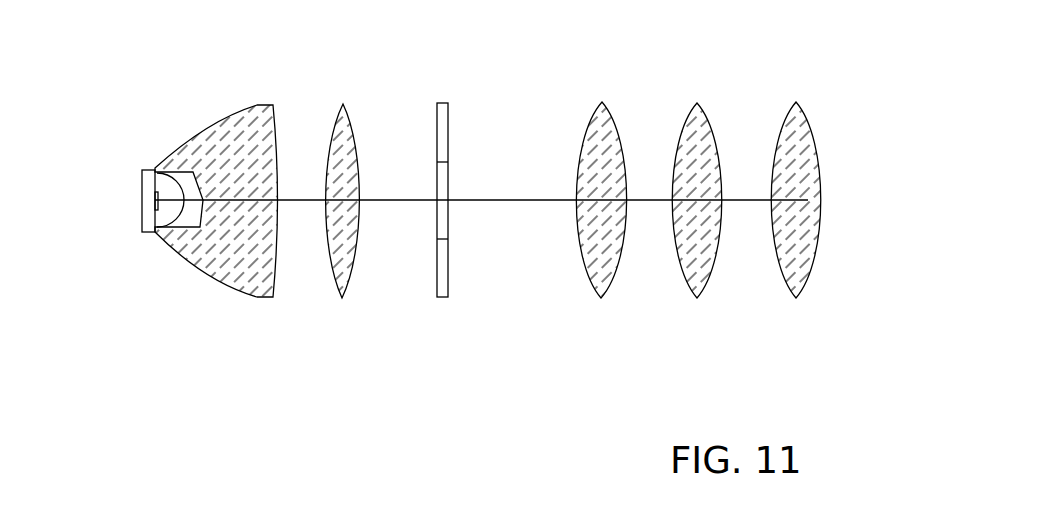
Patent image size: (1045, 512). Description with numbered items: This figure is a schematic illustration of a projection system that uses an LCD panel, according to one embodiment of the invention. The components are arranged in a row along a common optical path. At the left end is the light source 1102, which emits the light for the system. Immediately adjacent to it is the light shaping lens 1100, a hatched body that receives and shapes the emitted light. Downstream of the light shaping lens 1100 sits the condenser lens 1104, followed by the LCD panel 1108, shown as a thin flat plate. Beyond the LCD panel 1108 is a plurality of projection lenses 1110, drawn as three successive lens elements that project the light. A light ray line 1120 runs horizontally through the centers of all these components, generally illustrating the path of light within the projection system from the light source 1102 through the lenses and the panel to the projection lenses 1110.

The light shaping lens 1100 is at (203, 268).
The light source 1102 is at (142, 187).
The condenser lens 1104 is at (341, 105).
The LCD panel 1108 is at (448, 120).
The projection lenses 1110 is at (610, 103).
The light ray line 1120 is at (540, 200).